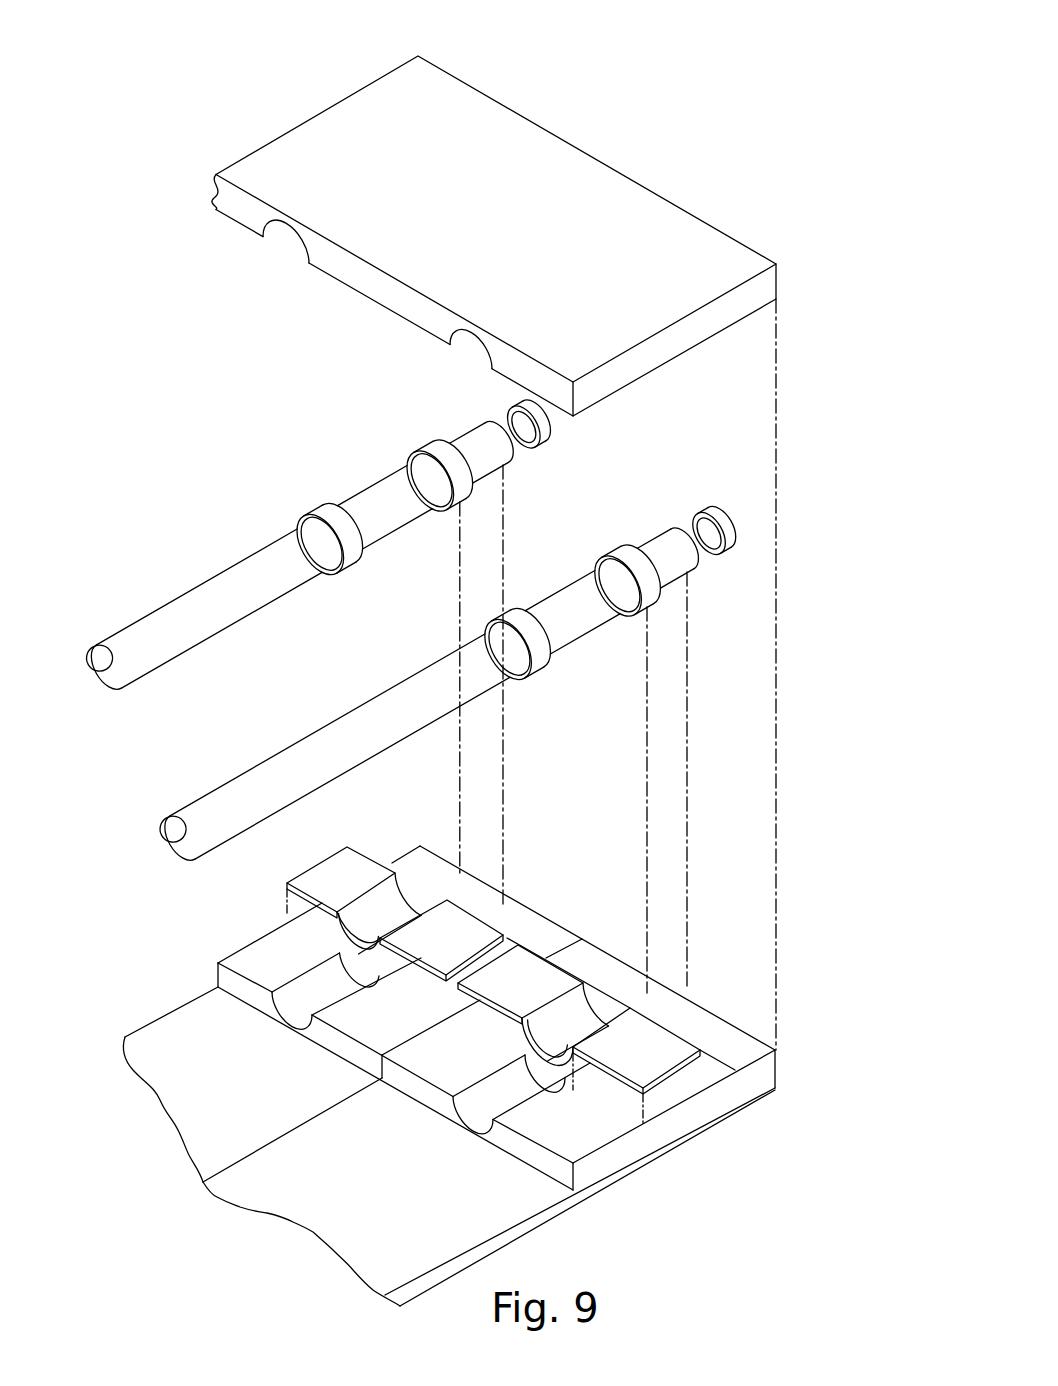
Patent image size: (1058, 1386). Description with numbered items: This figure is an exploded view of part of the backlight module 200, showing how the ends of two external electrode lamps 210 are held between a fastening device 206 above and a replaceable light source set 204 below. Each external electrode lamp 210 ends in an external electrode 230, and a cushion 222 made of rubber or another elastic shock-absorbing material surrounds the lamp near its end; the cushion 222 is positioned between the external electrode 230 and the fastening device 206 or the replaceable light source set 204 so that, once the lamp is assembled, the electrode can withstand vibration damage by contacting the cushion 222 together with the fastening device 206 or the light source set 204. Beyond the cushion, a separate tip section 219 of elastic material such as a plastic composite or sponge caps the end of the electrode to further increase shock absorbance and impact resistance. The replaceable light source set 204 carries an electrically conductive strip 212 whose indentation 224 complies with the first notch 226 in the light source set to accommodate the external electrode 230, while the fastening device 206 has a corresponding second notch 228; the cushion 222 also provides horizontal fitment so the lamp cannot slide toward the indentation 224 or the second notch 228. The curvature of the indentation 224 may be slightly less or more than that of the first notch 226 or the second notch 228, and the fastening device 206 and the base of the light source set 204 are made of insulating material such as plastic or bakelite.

The backlight module 200 is at (710, 77).
The replaceable light source set 204 is at (601, 1176).
The fastening device 206 is at (656, 209).
The external electrode lamp 210 is at (394, 700).
The electrically conductive strip 212 is at (662, 1062).
The tip section 219 is at (718, 506).
The cushion 222 is at (627, 580).
The indentation 224 is at (588, 1012).
The first notch 226 is at (470, 1124).
The second notch 228 is at (285, 240).
The external electrode 230 is at (572, 612).